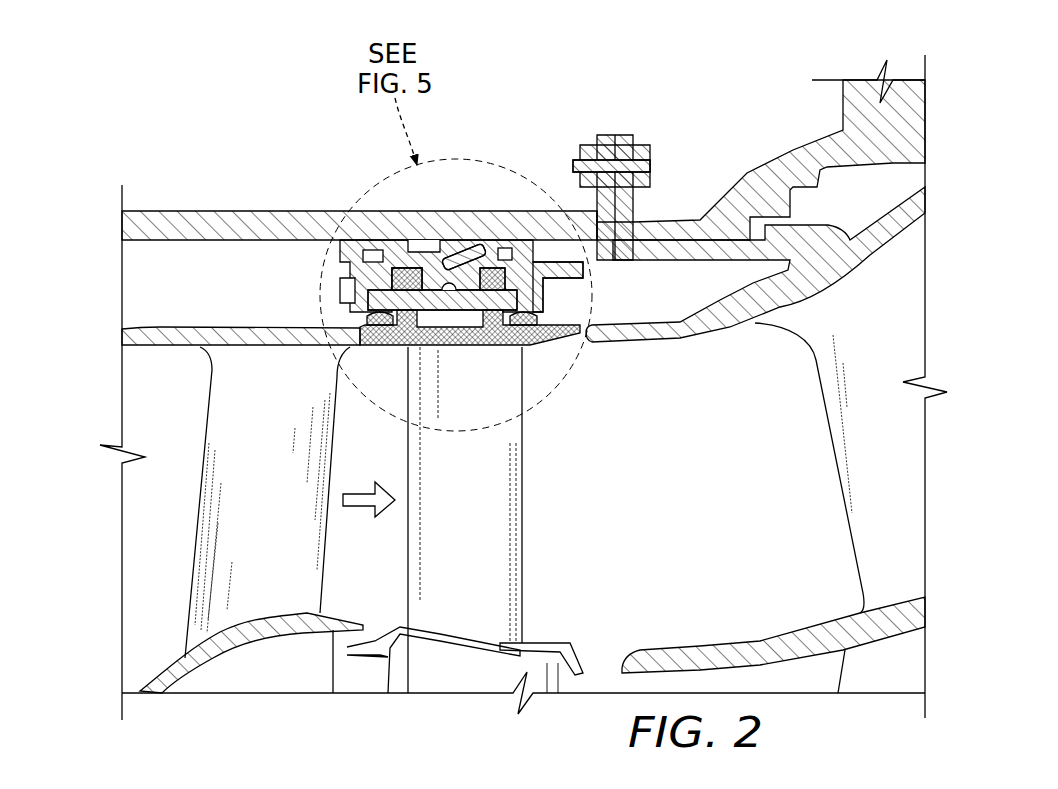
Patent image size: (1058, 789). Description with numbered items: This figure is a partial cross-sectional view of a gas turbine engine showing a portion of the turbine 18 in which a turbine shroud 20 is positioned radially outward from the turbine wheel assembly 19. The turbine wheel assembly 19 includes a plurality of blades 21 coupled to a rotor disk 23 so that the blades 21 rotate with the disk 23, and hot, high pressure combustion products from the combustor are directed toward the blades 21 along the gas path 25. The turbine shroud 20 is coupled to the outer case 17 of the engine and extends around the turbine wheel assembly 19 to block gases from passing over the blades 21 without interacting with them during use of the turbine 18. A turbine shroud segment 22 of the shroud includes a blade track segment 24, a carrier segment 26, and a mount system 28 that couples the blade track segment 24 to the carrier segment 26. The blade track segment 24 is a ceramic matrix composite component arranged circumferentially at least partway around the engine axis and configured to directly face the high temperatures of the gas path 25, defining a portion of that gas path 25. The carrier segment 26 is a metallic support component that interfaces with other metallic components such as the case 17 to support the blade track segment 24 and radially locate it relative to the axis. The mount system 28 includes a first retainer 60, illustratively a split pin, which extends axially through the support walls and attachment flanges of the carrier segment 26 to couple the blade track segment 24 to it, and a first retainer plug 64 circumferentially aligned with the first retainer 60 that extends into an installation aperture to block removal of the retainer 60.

The outer case 17 is at (218, 196).
The turbine 18 is at (130, 110).
The turbine wheel assembly 19 is at (585, 577).
The turbine shroud 20 is at (540, 200).
The blades 21 is at (527, 535).
The turbine shroud segment 22 is at (486, 223).
The rotor disk 23 is at (567, 685).
The blade track segment 24 is at (392, 355).
The gas path 25 is at (381, 463).
The carrier segment 26 is at (343, 266).
The mount system 28 is at (685, 83).
The first retainer 60 is at (515, 276).
The first retainer plug 64 is at (551, 299).